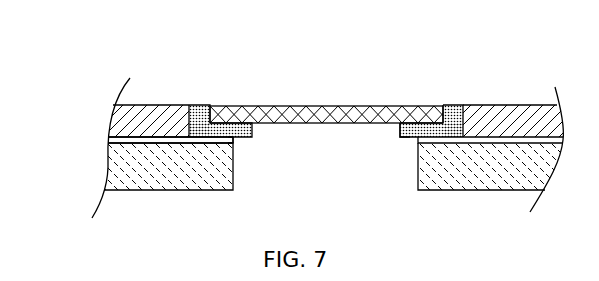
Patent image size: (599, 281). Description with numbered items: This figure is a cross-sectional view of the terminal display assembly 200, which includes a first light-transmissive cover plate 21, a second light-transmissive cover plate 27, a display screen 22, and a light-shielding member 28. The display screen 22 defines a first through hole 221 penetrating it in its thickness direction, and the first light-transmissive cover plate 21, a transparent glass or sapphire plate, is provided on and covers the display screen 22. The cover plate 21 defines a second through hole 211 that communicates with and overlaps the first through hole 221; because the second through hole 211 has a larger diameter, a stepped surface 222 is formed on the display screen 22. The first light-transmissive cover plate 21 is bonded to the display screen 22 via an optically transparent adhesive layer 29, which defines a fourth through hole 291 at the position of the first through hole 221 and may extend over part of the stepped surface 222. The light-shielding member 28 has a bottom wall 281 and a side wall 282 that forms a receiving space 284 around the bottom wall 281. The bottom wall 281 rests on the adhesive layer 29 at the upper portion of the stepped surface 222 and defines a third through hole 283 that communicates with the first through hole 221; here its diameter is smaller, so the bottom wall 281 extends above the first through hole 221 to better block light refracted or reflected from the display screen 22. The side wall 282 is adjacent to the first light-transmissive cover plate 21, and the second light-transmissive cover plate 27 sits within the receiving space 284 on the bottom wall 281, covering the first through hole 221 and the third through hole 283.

The terminal display assembly 200 is at (95, 108).
The first light-transmissive cover plate 21 is at (520, 104).
The second through hole 211 is at (190, 105).
The display screen 22 is at (109, 163).
The first through hole 221 is at (417, 177).
The stepped surface 222 is at (417, 141).
The second light-transmissive cover plate 27 is at (318, 105).
The light-shielding member 28 is at (440, 78).
The bottom wall 281 is at (416, 127).
The side wall 282 is at (455, 104).
The third through hole 283 is at (398, 130).
The receiving space 284 is at (212, 106).
The optically transparent adhesive layer 29 is at (109, 141).
The fourth through hole 291 is at (237, 143).